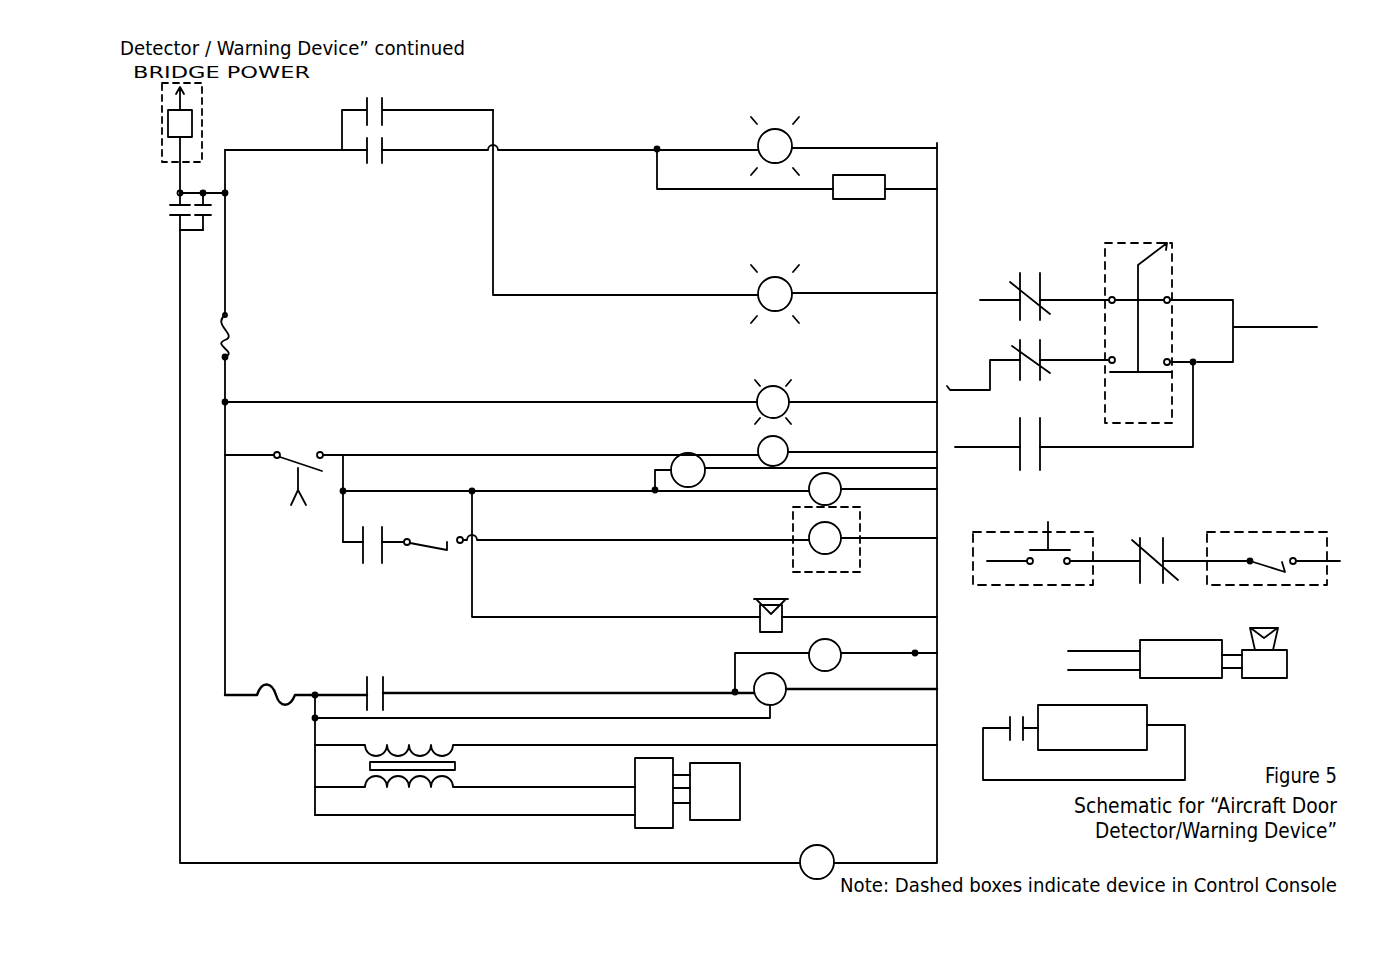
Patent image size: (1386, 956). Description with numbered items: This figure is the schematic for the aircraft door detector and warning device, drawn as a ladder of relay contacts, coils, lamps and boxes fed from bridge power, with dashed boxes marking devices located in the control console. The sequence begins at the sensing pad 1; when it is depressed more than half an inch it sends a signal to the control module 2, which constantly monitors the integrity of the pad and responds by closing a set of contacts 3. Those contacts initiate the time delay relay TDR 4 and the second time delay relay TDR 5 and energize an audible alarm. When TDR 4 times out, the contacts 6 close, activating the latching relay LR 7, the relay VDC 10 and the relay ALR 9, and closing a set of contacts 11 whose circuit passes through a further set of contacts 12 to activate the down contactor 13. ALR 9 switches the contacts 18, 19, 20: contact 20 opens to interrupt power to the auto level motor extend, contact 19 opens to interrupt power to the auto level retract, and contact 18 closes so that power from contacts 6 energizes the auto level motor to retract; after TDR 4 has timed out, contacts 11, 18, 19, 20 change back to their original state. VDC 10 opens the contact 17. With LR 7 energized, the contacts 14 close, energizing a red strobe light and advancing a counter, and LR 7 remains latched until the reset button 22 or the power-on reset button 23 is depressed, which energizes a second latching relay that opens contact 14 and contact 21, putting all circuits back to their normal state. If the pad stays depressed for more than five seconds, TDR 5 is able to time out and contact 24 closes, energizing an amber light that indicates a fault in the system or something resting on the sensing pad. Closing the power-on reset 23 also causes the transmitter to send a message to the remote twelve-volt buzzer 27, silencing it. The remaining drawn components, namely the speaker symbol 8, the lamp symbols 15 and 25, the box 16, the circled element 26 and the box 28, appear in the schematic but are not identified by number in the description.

The sensing pad 1 is at (715, 791).
The control module 2 is at (654, 793).
The set of contacts 3 is at (375, 685).
The TDR 4 is at (770, 689).
The TDR 2 5 is at (825, 655).
The contacts 6 is at (298, 470).
The LR1 7 is at (773, 451).
The speaker 8 is at (771, 615).
The ALR 9 is at (825, 489).
The VDC 10 is at (796, 471).
The set of contacts 11 is at (373, 555).
The set of contacts 12 is at (433, 555).
The down contactor 13 is at (826, 539).
The contacts 14 is at (374, 162).
The warning lamp 15 is at (775, 146).
The resistor 16 is at (859, 187).
The contact 17 is at (1155, 550).
The contact 18 is at (1031, 438).
The contact 19 is at (1031, 351).
The contact 20 is at (1030, 287).
The contact 21 is at (1016, 716).
The reset button 22 is at (168, 211).
The power on reset 23 is at (214, 211).
The contact 24 is at (417, 115).
The warning lamp 25 is at (775, 294).
The indicator 26 is at (817, 862).
The remote 12 volt buzzer 27 is at (1264, 653).
The amplifier 28 is at (1092, 727).